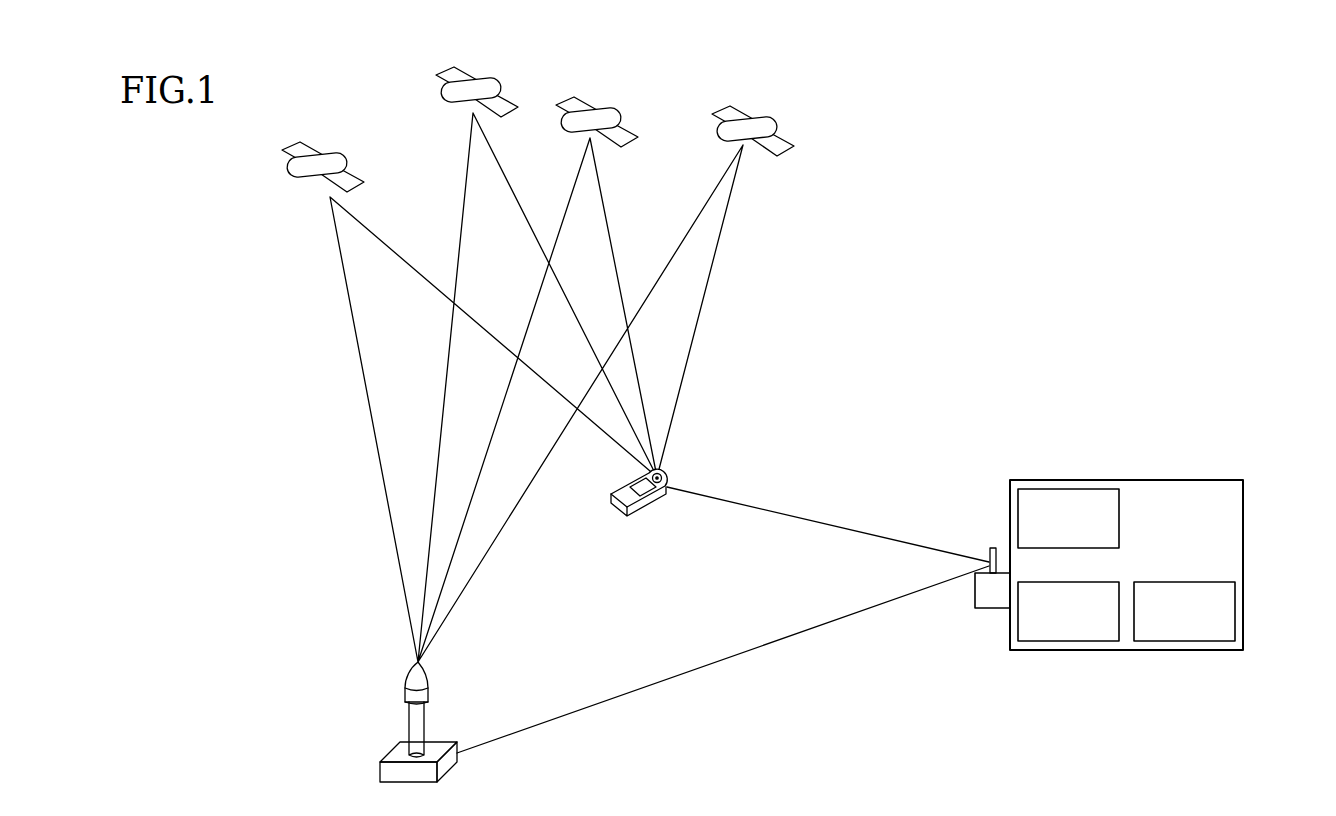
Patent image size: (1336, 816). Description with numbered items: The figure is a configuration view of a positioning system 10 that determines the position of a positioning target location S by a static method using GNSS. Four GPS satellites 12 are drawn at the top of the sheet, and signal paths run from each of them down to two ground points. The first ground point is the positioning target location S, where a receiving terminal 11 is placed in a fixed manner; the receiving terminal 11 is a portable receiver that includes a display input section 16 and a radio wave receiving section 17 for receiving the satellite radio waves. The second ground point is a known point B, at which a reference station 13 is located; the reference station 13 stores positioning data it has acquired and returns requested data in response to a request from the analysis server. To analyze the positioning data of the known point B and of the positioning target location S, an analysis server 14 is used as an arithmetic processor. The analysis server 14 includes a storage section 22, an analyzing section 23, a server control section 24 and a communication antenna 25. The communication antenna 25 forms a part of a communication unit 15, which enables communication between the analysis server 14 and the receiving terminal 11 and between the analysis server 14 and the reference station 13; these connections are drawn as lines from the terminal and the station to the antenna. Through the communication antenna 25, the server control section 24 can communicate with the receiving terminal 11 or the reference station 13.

The positioning system 10 is at (975, 192).
The receiving terminal 11 is at (635, 513).
The GPS satellite 12 is at (339, 155).
The reference station 13 is at (405, 717).
The analysis server 14 is at (1048, 480).
The communication unit 15 is at (823, 503).
The display input section 16 is at (628, 481).
The radio wave receiving section 17 is at (659, 486).
The storage section 22 is at (1070, 642).
The analyzing section 23 is at (1182, 642).
The server control section 24 is at (1120, 533).
The communication antenna 25 is at (986, 614).
The positioning target location S is at (670, 477).
The known point B is at (423, 662).